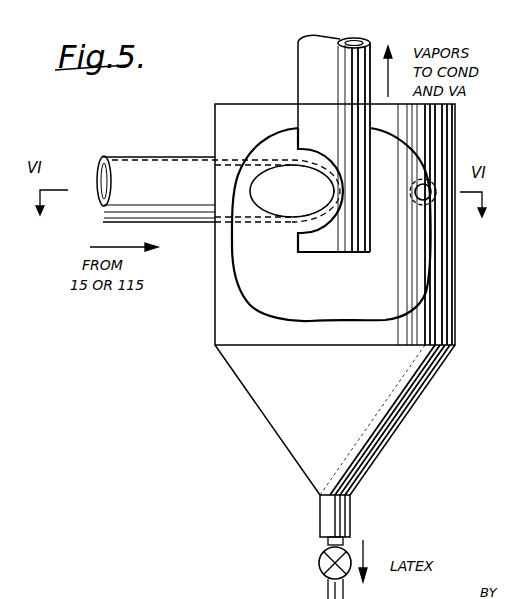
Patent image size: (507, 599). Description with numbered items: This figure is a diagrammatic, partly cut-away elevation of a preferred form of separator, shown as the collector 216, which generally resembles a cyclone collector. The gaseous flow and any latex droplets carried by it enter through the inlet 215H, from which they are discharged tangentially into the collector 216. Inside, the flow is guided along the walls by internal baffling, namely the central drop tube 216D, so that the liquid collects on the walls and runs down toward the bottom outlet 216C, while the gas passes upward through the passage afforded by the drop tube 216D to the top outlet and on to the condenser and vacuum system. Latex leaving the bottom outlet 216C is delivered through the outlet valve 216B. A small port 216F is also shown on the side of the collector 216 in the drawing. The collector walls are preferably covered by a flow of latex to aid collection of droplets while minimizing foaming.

The collector 216 is at (216, 346).
The drop tube 216D is at (310, 95).
The inlet 215H is at (173, 145).
The port 216F is at (427, 201).
The bottom outlet 216C is at (343, 512).
The outlet valve 216B is at (318, 567).